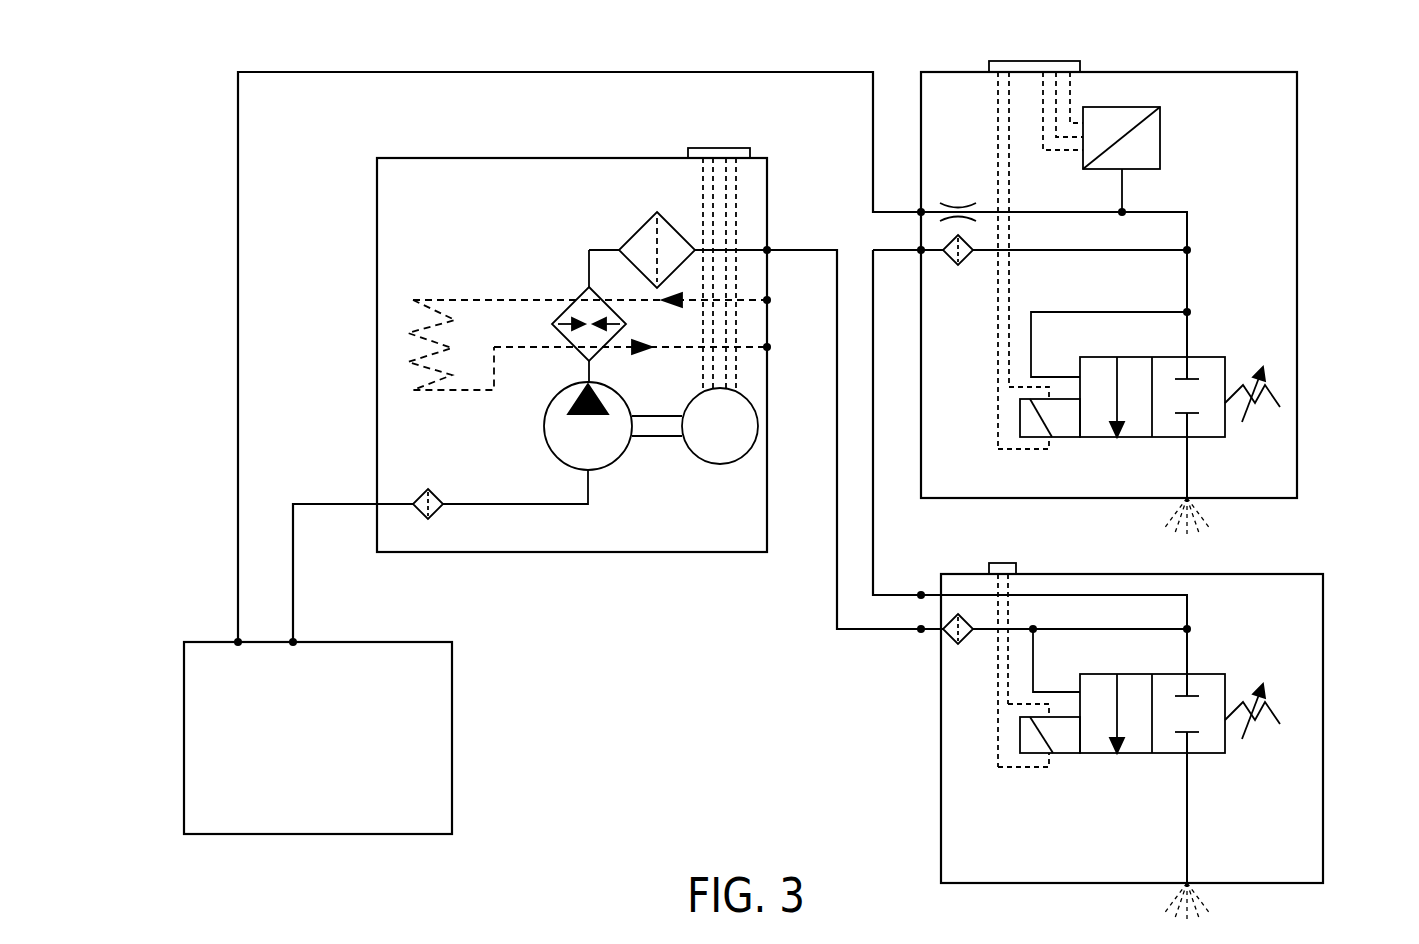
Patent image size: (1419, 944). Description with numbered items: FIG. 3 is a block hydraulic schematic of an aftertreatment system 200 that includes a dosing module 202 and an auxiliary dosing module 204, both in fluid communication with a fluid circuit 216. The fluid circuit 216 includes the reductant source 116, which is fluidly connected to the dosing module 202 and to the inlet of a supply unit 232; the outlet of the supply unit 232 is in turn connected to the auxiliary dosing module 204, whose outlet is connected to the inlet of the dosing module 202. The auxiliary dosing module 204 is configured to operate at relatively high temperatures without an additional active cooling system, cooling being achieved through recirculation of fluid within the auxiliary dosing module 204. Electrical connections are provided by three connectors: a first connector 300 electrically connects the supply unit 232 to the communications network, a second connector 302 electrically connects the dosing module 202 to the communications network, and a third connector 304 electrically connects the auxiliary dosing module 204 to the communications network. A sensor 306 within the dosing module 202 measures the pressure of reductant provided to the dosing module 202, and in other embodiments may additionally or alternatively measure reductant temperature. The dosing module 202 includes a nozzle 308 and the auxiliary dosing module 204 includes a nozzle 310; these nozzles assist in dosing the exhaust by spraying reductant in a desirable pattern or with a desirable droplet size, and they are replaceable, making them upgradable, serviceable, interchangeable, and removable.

The aftertreatment system 200 is at (158, 103).
The reductant source 116 is at (452, 710).
The supply unit 232 is at (433, 157).
The first connector 300 is at (695, 148).
The second connector 302 is at (1020, 60).
The third connector 304 is at (997, 562).
The sensor 306 is at (1120, 107).
The nozzle 308 is at (1192, 500).
The nozzle 310 is at (1192, 885).
The dosing module 202 is at (1298, 130).
The auxiliary dosing module 204 is at (941, 782).
The fluid circuit 216 is at (774, 594).